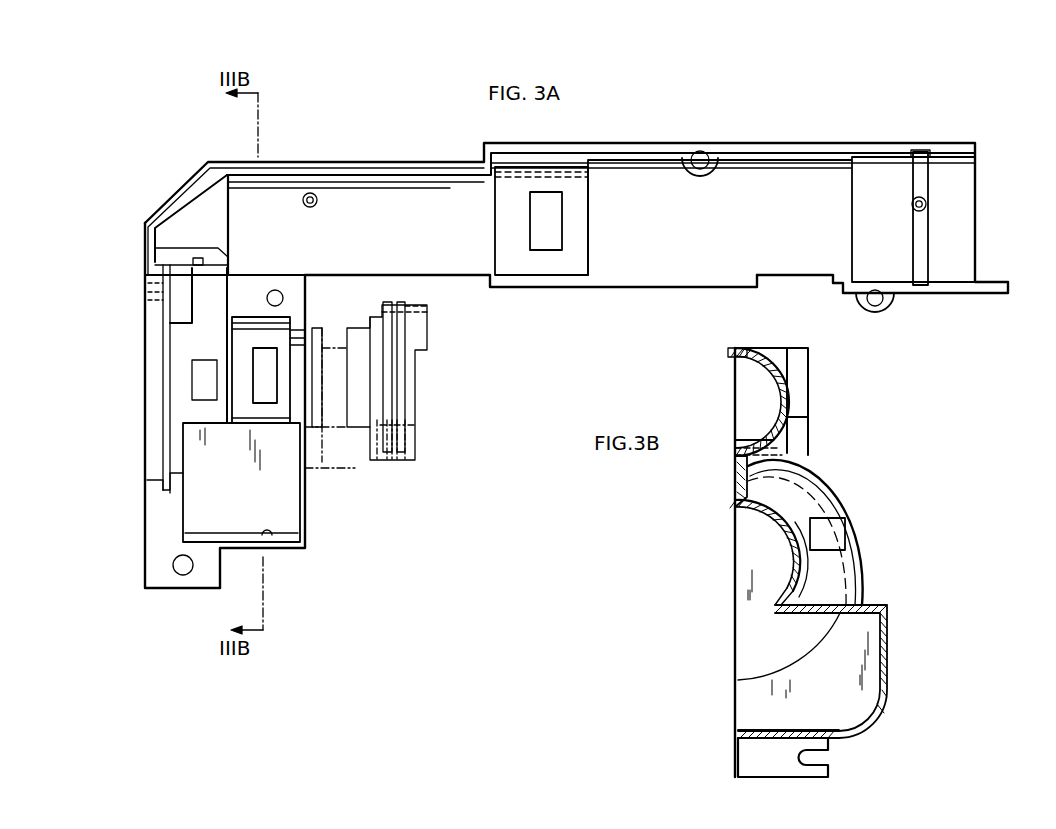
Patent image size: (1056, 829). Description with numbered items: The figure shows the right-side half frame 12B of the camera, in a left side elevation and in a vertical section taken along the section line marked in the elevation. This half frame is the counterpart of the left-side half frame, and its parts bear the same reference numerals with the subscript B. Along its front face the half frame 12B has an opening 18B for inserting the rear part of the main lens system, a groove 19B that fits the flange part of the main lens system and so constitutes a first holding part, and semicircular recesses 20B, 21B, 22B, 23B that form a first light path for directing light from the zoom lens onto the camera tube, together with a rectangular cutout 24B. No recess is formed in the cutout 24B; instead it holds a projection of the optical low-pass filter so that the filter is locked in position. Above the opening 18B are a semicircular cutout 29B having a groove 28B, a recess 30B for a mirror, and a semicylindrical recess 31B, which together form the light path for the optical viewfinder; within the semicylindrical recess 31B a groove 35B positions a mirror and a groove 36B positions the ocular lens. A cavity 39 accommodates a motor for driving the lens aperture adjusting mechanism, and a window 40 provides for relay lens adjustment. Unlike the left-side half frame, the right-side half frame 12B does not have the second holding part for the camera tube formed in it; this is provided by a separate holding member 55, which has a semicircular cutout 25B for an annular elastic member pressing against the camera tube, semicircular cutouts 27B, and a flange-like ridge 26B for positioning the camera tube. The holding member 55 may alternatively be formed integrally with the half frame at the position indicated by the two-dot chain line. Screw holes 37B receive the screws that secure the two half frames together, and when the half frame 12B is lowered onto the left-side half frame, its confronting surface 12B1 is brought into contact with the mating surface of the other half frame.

In FIG. 3A, the right-side half frame 12B is at (814, 110).
In FIG. 3B, the right-side half frame 12B is at (861, 394).
In FIG. 3A, the confronting surface 12B1 is at (654, 287).
In FIG. 3B, the confronting surface 12B1 is at (733, 358).
In FIG. 3A, the opening 18B is at (155, 478).
In FIG. 3A, the groove 19B is at (173, 477).
In FIG. 3A, the semicircular recess 20B is at (213, 270).
In FIG. 3A, the semicircular recess 21B is at (243, 316).
In FIG. 3B, the semicircular recess 21B is at (768, 517).
In FIG. 3A, the semicircular recess 22B is at (312, 332).
In FIG. 3A, the semicircular recess 23B is at (364, 431).
In FIG. 3A, the rectangular cutout 24B is at (336, 406).
In FIG. 3A, the semicircular cutout 25B is at (381, 430).
In FIG. 3A, the flange-like ridge 26B is at (403, 441).
In FIG. 3A, the semicircular cutouts 27B is at (418, 438).
In FIG. 3A, the groove 28B is at (196, 260).
In FIG. 3A, the semicircular cutout 29B is at (190, 300).
In FIG. 3A, the recess for a mirror 30B is at (193, 205).
In FIG. 3A, the semicylindrical recess 31B is at (410, 185).
In FIG. 3B, the semicylindrical recess 31B is at (747, 399).
In FIG. 3A, the groove 35B is at (205, 160).
In FIG. 3A, the groove 36B is at (923, 150).
In FIG. 3A, the screw holes 37B is at (702, 156).
In FIG. 3A, the cavity 39 is at (272, 537).
In FIG. 3B, the cavity 39 is at (747, 709).
In FIG. 3A, the window 40 is at (538, 243).
In FIG. 3A, the holding member 55 is at (428, 331).